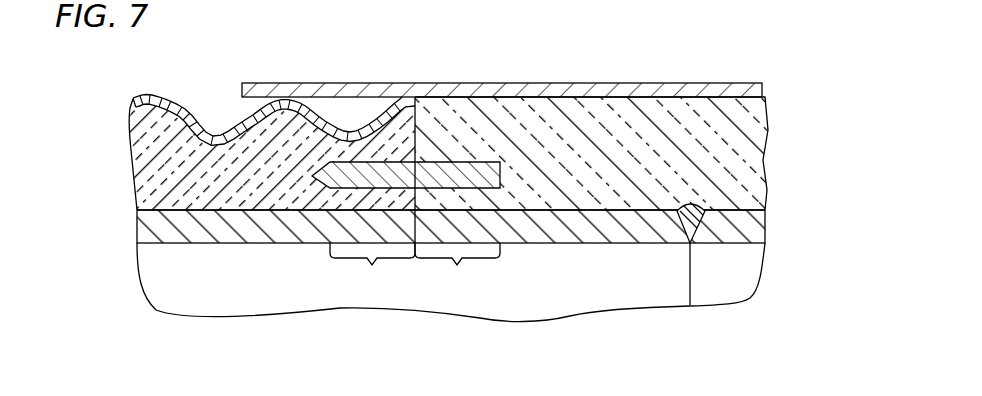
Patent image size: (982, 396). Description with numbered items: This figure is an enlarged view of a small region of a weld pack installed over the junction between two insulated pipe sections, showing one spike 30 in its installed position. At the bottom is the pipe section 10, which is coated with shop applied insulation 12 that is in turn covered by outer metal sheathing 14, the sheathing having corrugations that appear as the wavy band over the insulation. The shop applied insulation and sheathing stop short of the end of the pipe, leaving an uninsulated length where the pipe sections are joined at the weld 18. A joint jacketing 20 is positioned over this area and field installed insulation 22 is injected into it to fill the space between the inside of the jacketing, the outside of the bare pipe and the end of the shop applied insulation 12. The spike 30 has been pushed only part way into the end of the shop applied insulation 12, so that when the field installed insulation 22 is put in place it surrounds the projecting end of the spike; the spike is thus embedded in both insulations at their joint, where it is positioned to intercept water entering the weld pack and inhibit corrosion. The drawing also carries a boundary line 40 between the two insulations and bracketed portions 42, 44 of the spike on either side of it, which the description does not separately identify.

The pipe section 10 is at (230, 242).
The shop applied insulation 12 is at (143, 152).
The outer metal sheathing 14 is at (168, 100).
The weld 18 is at (688, 210).
The joint jacketing 20 is at (367, 83).
The field installed insulation 22 is at (543, 112).
The spike 30 is at (450, 160).
The boundary line 40 is at (415, 97).
The second region 42 is at (457, 270).
The first region 44 is at (372, 270).